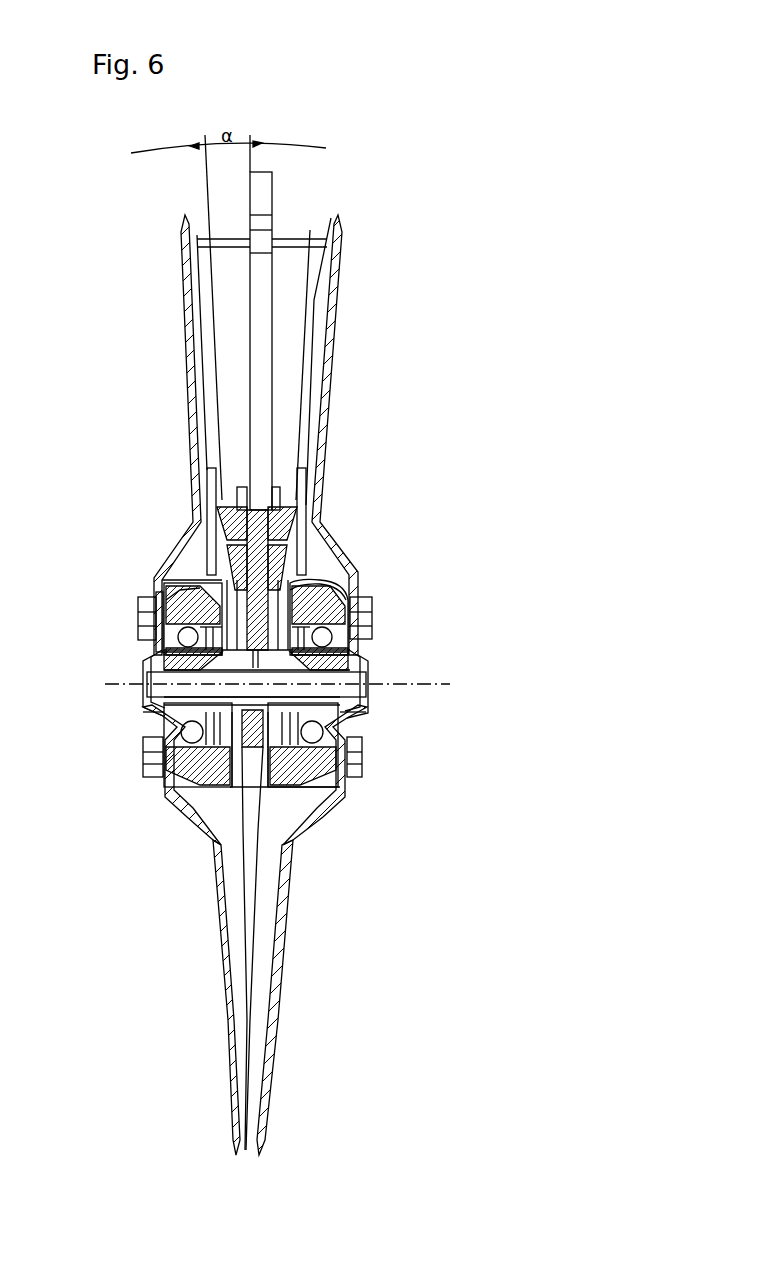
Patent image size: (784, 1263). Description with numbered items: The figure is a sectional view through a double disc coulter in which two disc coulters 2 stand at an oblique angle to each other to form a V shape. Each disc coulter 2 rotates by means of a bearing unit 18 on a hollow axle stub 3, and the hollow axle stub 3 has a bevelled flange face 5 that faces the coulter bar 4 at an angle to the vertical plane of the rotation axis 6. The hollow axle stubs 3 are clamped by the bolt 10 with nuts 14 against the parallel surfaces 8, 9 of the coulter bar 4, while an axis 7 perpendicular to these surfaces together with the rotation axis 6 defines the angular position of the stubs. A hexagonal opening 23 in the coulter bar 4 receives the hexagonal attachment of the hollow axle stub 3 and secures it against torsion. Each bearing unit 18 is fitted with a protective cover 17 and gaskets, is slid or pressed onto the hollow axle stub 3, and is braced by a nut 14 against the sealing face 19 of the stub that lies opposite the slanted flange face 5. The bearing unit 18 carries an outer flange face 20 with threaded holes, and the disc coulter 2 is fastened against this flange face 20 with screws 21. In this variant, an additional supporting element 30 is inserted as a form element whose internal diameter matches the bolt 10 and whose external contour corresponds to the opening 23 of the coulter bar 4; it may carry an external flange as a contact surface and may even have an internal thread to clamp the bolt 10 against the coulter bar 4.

The disc coulter 2 is at (343, 326).
The hollow axle stub 3 is at (147, 747).
The coulter bar 4 is at (263, 787).
The flange face 5 is at (362, 657).
The rotation axis 6 is at (108, 690).
The axis vertical to the flange face 7 is at (405, 684).
The flange face of the coulter bar 8 is at (247, 413).
The flange face of the coulter bar 9 is at (270, 427).
The bolt 10 is at (158, 653).
The nut 14 is at (143, 712).
The protective cover 17 is at (165, 798).
The bearing unit 18 is at (158, 596).
The sealing face 19 is at (330, 677).
The outer flange face 20 is at (137, 600).
The screw 21 is at (150, 645).
The hexagonal opening 23 is at (333, 788).
The supporting element 30 is at (340, 787).